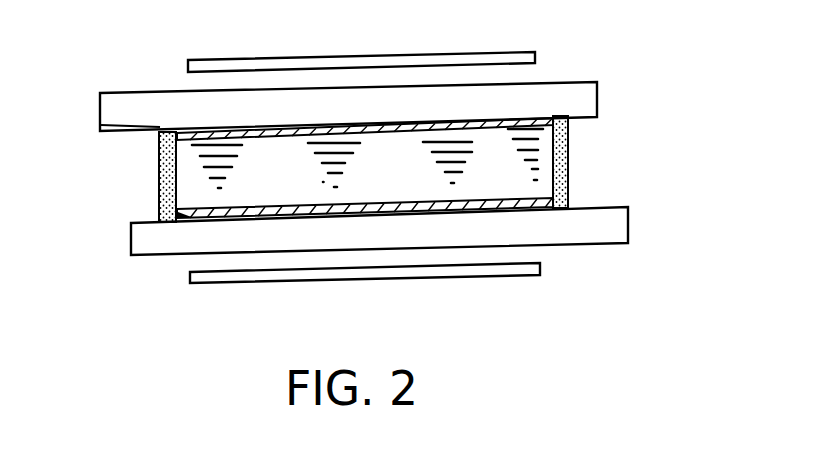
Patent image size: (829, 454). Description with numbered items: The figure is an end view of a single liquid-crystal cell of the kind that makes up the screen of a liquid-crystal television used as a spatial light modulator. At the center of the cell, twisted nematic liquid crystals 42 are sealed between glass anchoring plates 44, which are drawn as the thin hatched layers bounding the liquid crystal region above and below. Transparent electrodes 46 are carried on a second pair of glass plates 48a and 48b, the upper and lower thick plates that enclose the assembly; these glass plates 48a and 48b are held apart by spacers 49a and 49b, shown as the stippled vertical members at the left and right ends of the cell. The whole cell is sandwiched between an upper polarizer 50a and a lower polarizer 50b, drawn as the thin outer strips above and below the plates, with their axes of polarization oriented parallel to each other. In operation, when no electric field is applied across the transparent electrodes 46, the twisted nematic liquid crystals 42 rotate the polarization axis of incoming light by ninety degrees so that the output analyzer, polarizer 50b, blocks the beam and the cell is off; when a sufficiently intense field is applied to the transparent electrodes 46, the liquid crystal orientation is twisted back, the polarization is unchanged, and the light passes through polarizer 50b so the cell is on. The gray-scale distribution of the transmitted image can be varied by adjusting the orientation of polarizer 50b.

The twisted nematic liquid crystals 42 is at (485, 170).
The glass anchoring plates 44 is at (568, 198).
The transparent electrodes 46 is at (180, 213).
The glass plate 48a is at (588, 108).
The glass plate 48b is at (617, 233).
The spacer 49a is at (152, 181).
The spacer 49b is at (569, 174).
The polarizer 50a is at (537, 61).
The polarizer 50b is at (190, 279).